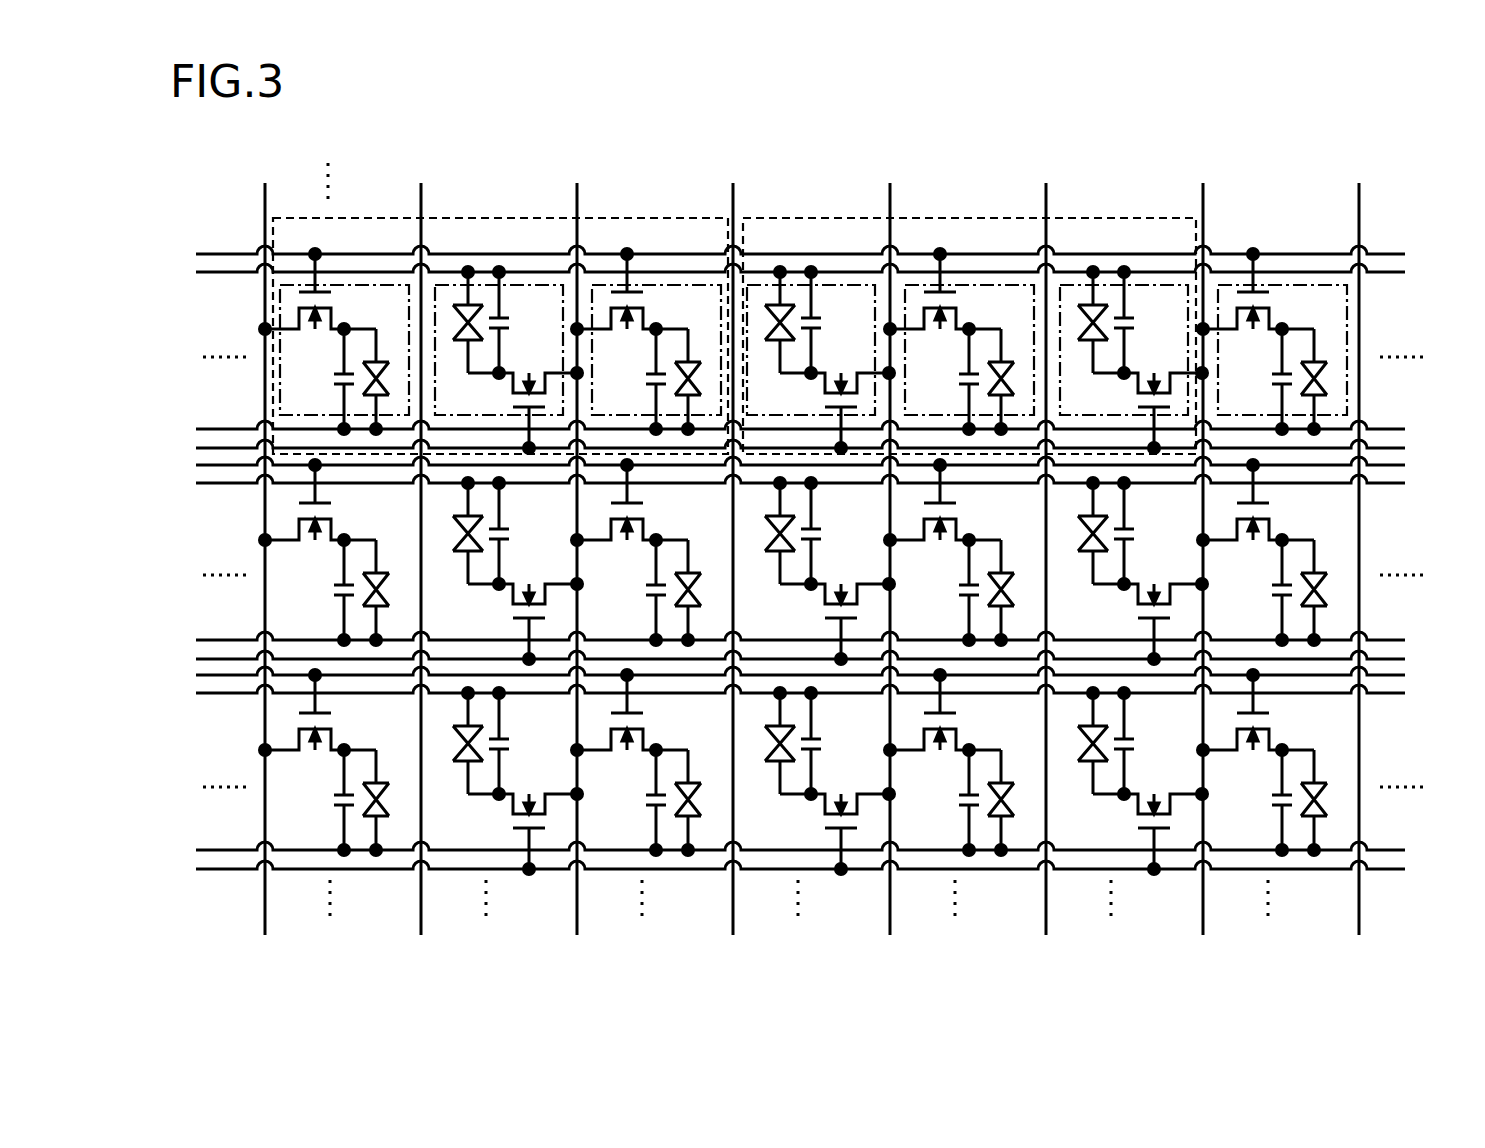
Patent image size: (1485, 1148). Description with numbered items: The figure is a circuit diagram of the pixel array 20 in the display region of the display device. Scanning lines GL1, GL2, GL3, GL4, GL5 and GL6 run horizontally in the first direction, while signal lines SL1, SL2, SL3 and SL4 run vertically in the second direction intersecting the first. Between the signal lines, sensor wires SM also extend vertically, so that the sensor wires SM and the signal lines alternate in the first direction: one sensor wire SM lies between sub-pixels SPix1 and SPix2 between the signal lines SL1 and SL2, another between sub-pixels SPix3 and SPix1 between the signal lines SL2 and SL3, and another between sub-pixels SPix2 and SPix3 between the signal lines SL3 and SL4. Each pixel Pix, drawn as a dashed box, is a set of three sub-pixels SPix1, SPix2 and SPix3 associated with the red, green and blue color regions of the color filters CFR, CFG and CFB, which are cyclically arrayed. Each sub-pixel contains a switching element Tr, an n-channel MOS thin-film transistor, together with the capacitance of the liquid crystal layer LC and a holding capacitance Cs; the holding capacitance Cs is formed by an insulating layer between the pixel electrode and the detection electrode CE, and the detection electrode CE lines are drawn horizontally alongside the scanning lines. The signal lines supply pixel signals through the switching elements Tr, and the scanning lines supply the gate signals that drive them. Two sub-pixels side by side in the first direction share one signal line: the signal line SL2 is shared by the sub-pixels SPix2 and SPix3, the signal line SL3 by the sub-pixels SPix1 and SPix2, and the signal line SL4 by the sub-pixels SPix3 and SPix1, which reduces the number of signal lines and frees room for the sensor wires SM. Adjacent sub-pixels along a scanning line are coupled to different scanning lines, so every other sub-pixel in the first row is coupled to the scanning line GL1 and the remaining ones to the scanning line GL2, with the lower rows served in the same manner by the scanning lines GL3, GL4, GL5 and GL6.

The display panel pixel array 20 is at (704, 122).
The signal line SL1 is at (265, 200).
The signal line SL2 is at (577, 183).
The signal line SL3 is at (890, 183).
The signal line SL4 is at (1203, 183).
The scanning line GL1 is at (200, 254).
The scanning line GL2 is at (200, 448).
The scanning line GL3 is at (200, 465).
The scanning line GL4 is at (200, 659).
The scanning line GL5 is at (200, 675).
The scanning line GL6 is at (200, 869).
The detection electrode CE is at (200, 272).
The sensor wire SM is at (421, 183).
The color filter CFG is at (523, 285).
The color filter CFB is at (670, 285).
The color filter CFR is at (828, 285).
The sub-pixel SPix1 is at (356, 282).
The sub-pixel SPix2 is at (451, 282).
The sub-pixel SPix3 is at (606, 282).
The pixel Pix is at (714, 218).
The liquid crystal layer LC is at (1323, 388).
The switching element Tr is at (313, 341).
The holding capacitance Cs is at (336, 392).